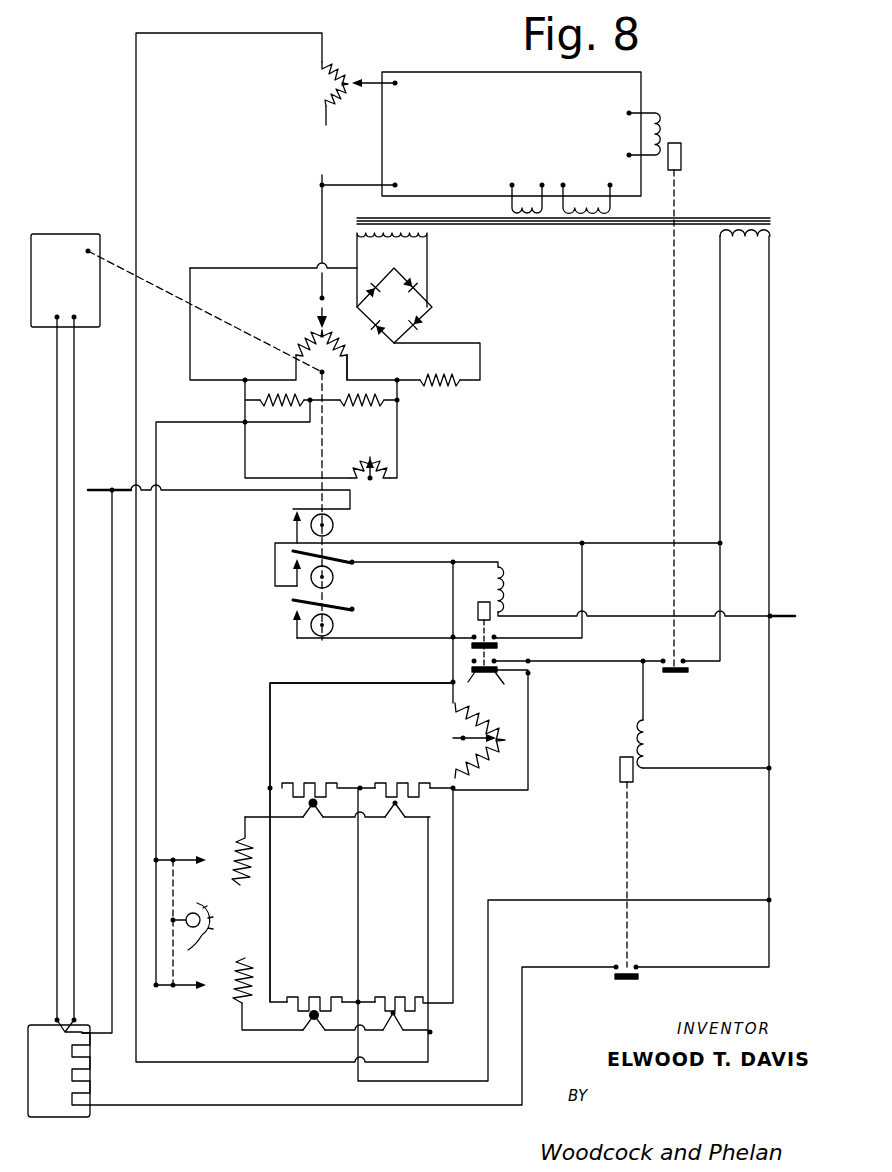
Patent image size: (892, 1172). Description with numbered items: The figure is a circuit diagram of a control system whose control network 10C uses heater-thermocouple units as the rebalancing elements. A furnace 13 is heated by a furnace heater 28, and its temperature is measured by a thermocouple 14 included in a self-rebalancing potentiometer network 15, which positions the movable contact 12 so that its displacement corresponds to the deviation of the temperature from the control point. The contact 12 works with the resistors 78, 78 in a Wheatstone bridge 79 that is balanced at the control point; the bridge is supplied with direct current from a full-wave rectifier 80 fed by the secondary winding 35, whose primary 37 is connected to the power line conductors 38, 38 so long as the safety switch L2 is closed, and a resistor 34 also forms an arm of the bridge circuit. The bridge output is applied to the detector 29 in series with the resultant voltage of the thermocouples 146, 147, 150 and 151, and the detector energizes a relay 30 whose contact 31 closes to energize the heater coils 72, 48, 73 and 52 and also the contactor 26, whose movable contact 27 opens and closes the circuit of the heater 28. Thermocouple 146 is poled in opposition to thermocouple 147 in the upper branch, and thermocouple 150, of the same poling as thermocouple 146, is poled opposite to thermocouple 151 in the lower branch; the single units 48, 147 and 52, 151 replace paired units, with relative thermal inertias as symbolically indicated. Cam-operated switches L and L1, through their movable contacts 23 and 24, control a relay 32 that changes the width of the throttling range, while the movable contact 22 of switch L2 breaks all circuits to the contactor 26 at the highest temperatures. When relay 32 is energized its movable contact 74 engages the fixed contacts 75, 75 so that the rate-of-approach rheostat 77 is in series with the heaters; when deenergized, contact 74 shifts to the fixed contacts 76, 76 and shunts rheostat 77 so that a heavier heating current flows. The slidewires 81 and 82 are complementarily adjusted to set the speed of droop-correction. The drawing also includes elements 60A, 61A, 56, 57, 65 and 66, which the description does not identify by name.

The potentiometer 60A is at (343, 68).
The detector 29 is at (525, 108).
The relay 30 is at (668, 128).
The transformer winding 56 is at (510, 212).
The transformer winding 57 is at (608, 213).
The secondary winding 35 is at (426, 240).
The primary winding 37 is at (745, 236).
The self-rebalancing potentiometer network 15 is at (70, 296).
The movable contact 12 is at (320, 298).
The full-wave rectifier 80 is at (394, 308).
The Wheatstone bridge 79 is at (370, 377).
The resistor 34 is at (448, 387).
The resistors 78 is at (378, 405).
The potentiometer 61A is at (370, 456).
The power line conductors 38 is at (100, 489).
The movable contact 22 is at (350, 510).
The movable contact 23 is at (352, 560).
The movable contact 24 is at (352, 609).
The safety switch L2 is at (293, 508).
The control switch L is at (292, 562).
The control switch L1 is at (293, 604).
The control network 10C is at (222, 674).
The relay 32 is at (505, 582).
The contacts 66 is at (498, 633).
The contact bar 65 is at (497, 646).
The fixed contacts 75 is at (472, 661).
The movable contact 74 is at (528, 673).
The fixed contacts 76 is at (496, 691).
The relay contact 31 is at (683, 672).
The rate of approach rheostat 77 is at (478, 717).
The heater coil 72 is at (300, 783).
The heater coil 48 is at (378, 783).
The thermocouple 146 is at (314, 822).
The thermocouple 147 is at (395, 822).
The contactor 26 is at (650, 740).
The slidewire 81 is at (248, 851).
The slidewire 82 is at (248, 980).
The heater coil 73 is at (312, 982).
The heater coil 52 is at (385, 981).
The thermocouple 150 is at (316, 1035).
The thermocouple 151 is at (393, 1035).
The movable contact structure 27 is at (638, 978).
The thermocouple 14 is at (60, 1032).
The furnace 13 is at (84, 1025).
The furnace heater 28 is at (72, 1070).